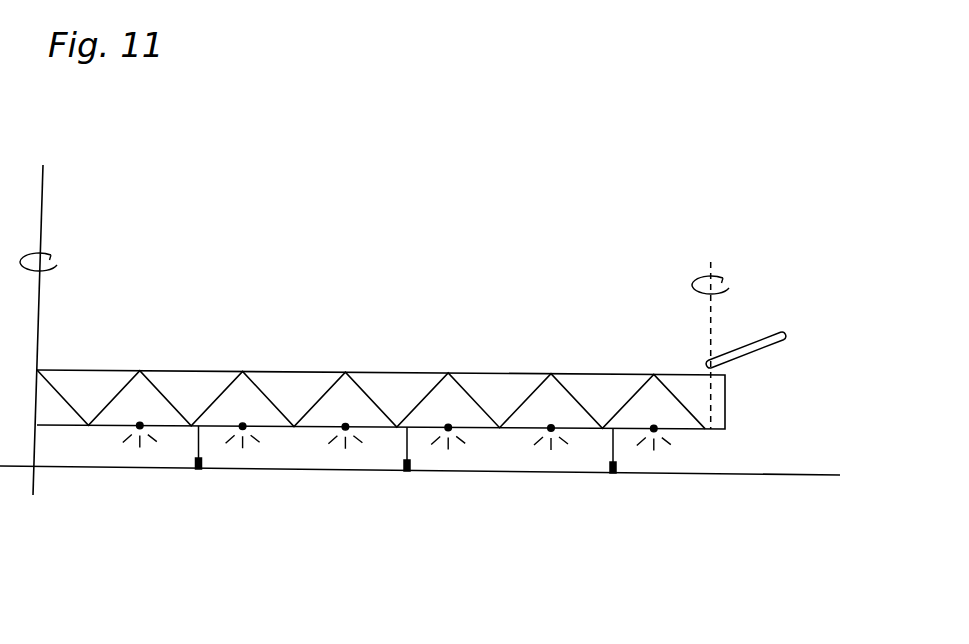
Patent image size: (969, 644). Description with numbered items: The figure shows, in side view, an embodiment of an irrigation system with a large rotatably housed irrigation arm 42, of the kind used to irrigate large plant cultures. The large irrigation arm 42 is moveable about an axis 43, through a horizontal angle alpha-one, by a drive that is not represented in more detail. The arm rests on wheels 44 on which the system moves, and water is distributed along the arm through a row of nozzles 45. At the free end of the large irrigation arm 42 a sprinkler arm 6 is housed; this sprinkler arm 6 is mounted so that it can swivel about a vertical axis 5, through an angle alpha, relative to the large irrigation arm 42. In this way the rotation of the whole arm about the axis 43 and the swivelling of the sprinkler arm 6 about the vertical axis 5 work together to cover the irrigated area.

The vertical axis 5 is at (708, 320).
The sprinkler arm 6 is at (758, 345).
The large irrigation arm 42 is at (305, 372).
The axis 43 is at (38, 327).
The wheels 44 is at (199, 470).
The nozzles 45 is at (144, 439).